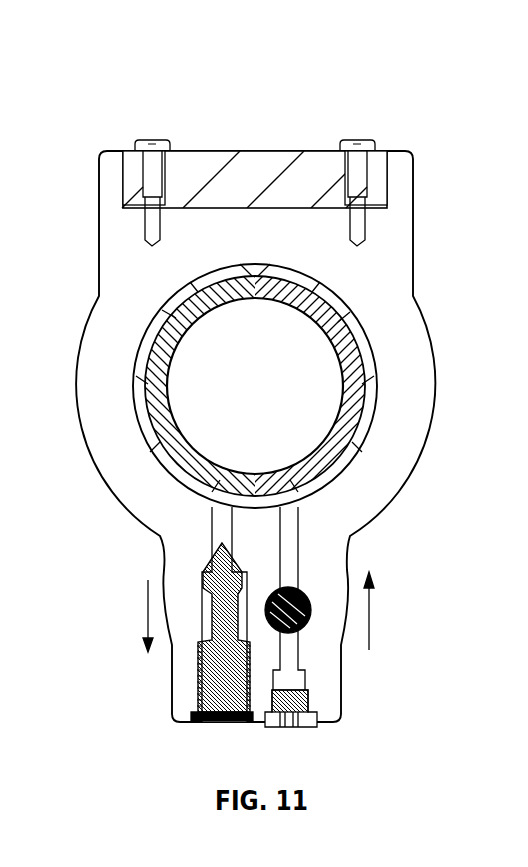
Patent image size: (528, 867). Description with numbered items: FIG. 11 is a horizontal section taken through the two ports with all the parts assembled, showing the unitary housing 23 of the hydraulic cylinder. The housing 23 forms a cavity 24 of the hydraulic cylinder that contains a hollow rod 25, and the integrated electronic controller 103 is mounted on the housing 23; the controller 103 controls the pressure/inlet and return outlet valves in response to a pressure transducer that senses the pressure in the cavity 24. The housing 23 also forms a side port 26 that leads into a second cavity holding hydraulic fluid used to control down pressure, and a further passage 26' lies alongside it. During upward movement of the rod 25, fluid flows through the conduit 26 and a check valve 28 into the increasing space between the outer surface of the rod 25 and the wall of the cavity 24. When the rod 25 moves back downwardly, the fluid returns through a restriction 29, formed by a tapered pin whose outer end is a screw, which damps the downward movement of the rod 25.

The integrated electronic controller 103 is at (205, 165).
The unitary housing 23 is at (406, 240).
The cavity 24 is at (367, 326).
The hollow rod 25 is at (365, 418).
The left fluid channel 26' is at (184, 614).
The side port 26 is at (338, 617).
The check valve 28 is at (306, 634).
The restriction 29 is at (213, 678).